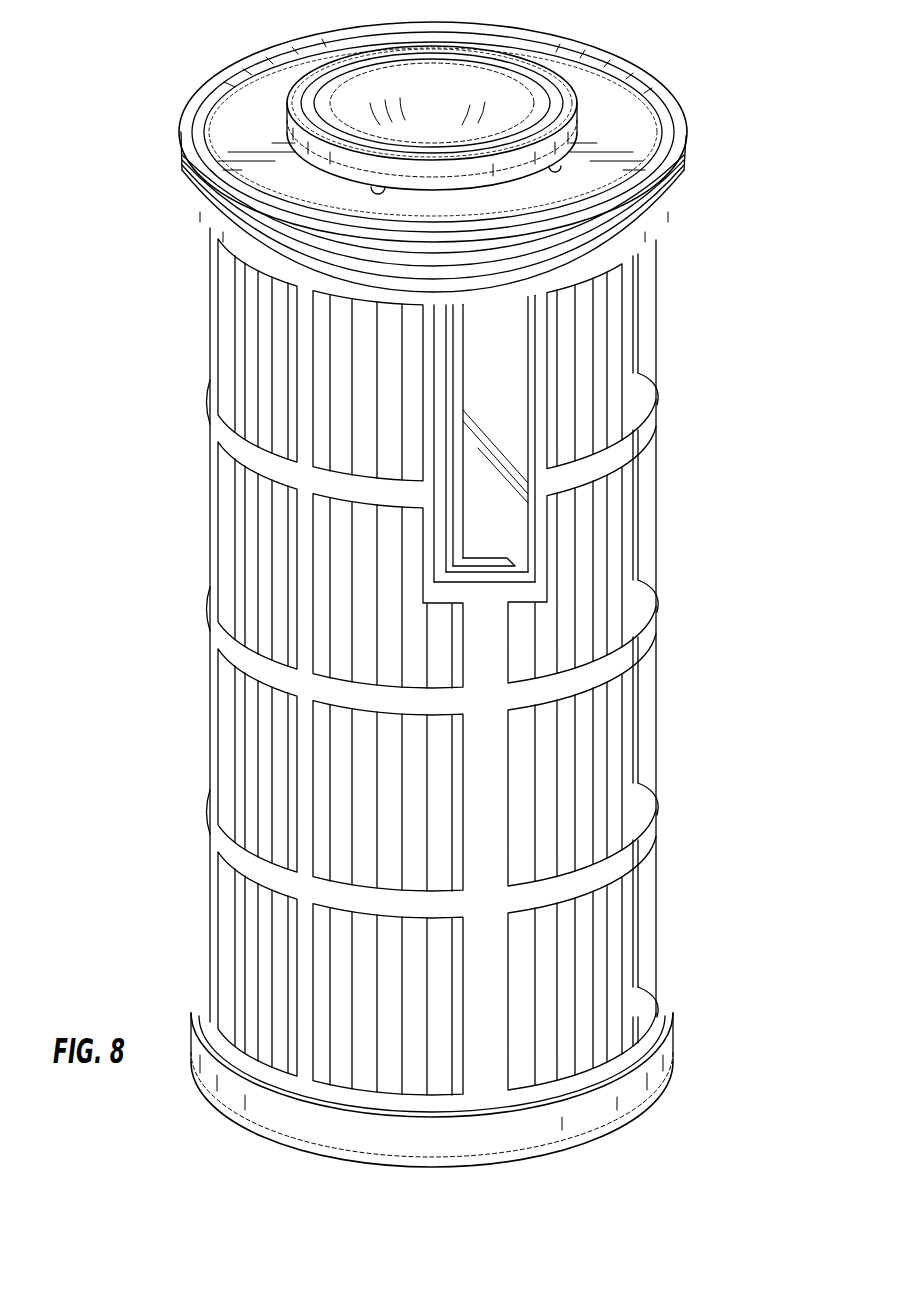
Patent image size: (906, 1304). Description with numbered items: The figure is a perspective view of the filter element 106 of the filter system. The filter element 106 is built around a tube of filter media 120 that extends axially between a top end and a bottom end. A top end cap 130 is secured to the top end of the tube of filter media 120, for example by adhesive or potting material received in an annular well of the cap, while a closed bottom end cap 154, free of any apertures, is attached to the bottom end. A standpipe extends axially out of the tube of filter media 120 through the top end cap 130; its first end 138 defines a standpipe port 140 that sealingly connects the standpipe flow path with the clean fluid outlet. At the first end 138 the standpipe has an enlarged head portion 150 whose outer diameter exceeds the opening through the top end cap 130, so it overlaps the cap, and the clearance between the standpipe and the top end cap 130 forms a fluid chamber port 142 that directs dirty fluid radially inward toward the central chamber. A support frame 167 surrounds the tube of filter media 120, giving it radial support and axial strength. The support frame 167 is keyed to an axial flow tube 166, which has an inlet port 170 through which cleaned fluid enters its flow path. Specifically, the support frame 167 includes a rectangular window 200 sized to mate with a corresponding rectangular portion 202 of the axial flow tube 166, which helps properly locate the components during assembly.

The filter element 106 is at (140, 591).
The tube of filter media 120 is at (260, 370).
The top end cap 130 is at (187, 128).
The first end 138 is at (300, 90).
The standpipe port 140 is at (345, 80).
The fluid chamber port 142 is at (342, 198).
The enlarged head portion 150 is at (287, 127).
The bottom end cap 154 is at (670, 1056).
The axial flow tube 166 is at (495, 508).
The support frame 167 is at (653, 828).
The inlet port 170 is at (508, 414).
The rectangular window 200 is at (420, 559).
The rectangular portion 202 is at (532, 542).